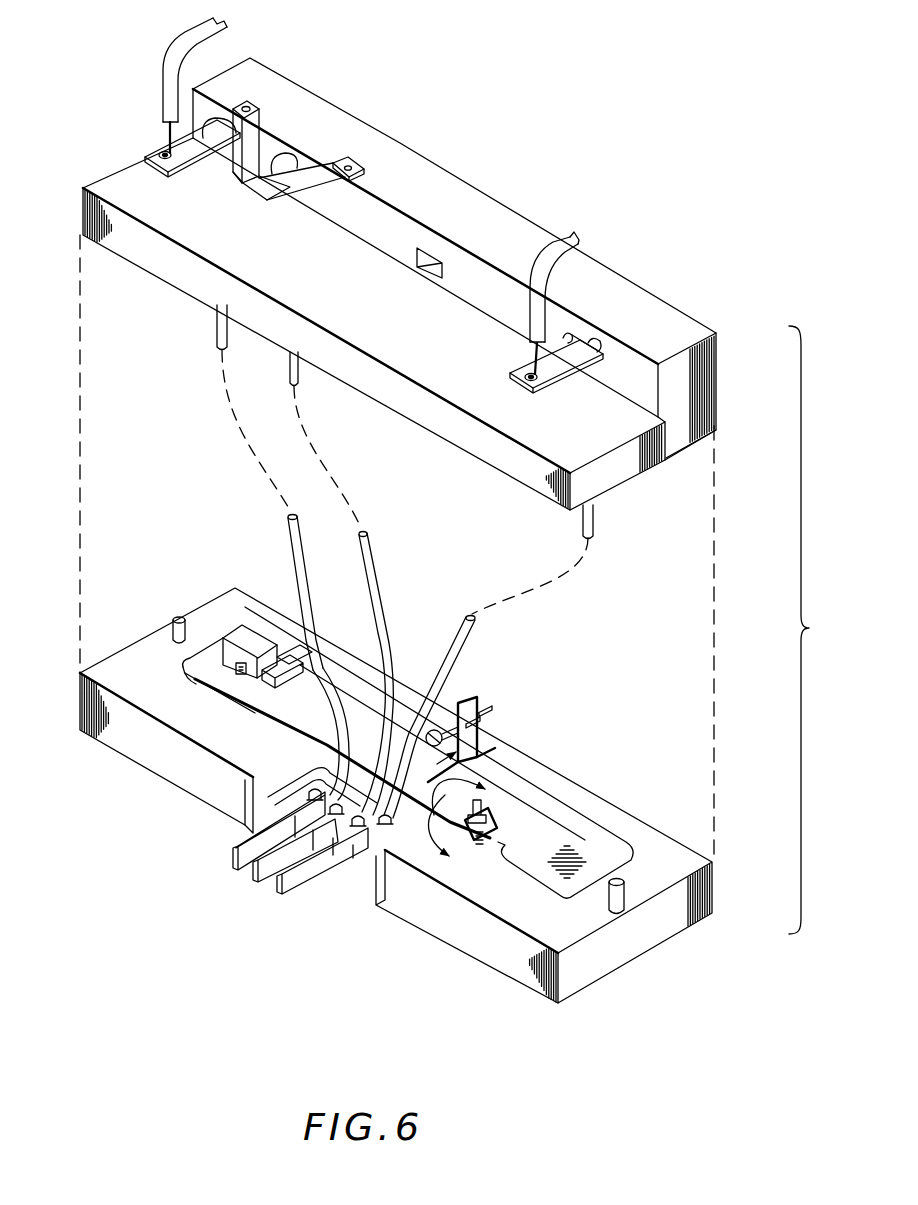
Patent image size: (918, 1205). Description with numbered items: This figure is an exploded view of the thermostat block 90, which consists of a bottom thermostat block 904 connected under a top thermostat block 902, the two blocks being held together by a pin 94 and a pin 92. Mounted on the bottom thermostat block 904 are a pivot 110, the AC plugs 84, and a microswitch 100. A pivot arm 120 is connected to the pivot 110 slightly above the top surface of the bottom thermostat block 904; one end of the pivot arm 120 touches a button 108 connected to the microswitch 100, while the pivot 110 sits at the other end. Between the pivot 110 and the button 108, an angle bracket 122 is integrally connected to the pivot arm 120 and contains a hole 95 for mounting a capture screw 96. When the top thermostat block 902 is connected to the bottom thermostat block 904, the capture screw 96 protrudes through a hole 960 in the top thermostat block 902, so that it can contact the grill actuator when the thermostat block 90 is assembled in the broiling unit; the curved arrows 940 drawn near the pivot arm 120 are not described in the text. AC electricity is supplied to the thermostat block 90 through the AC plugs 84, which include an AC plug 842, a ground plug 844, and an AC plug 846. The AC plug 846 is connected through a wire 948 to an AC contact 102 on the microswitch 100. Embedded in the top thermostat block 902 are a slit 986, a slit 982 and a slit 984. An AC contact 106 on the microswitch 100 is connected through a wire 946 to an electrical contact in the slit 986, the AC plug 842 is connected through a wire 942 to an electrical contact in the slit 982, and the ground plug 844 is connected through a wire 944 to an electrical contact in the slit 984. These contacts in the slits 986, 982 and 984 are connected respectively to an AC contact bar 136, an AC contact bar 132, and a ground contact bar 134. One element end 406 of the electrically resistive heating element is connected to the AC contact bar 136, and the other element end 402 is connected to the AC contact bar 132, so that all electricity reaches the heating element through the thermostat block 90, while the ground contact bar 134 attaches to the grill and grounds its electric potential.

The AC plugs 84 is at (228, 880).
The thermostat block 90 is at (813, 630).
The pin 92 is at (620, 915).
The pin 94 is at (176, 617).
The hole 95 is at (484, 722).
The capture screw 96 is at (492, 708).
The microswitch 100 is at (253, 640).
The AC contact 102 is at (282, 688).
The AC contact 106 is at (288, 672).
The button 108 is at (241, 677).
The pivot 110 is at (485, 815).
The pivot arm 120 is at (330, 740).
The angle bracket 122 is at (470, 742).
The AC contact bar 132 is at (568, 374).
The ground contact bar 134 is at (338, 162).
The AC contact bar 136 is at (185, 165).
The element end 402 is at (563, 240).
The element end 406 is at (193, 35).
The AC plug 842 is at (297, 880).
The ground plug 844 is at (262, 870).
The AC plug 846 is at (232, 857).
The top thermostat block 902 is at (610, 433).
The bottom thermostat block 904 is at (720, 886).
The rotation arrows 940 is at (439, 817).
The wire 942 is at (470, 640).
The wire 944 is at (363, 575).
The wire 946 is at (289, 538).
The wire 948 is at (334, 717).
The hole 960 is at (432, 266).
The slit 982 is at (598, 343).
The slit 984 is at (288, 158).
The slit 986 is at (228, 118).